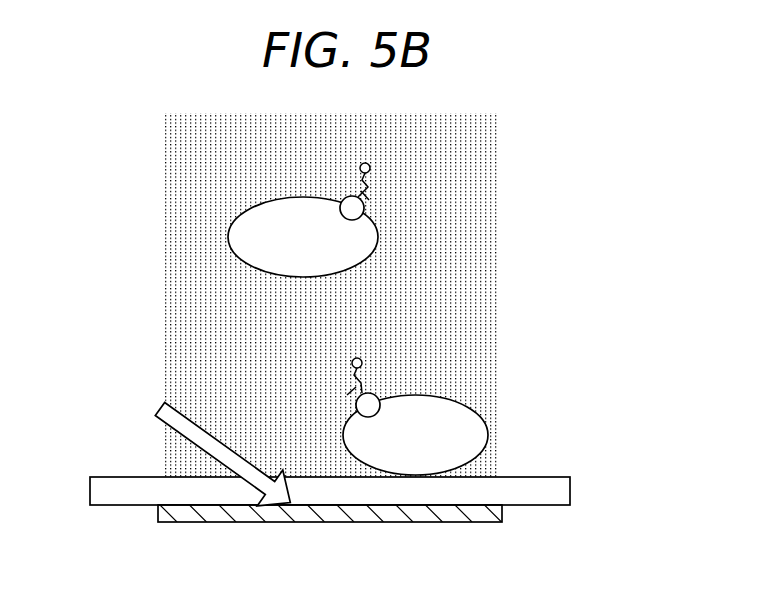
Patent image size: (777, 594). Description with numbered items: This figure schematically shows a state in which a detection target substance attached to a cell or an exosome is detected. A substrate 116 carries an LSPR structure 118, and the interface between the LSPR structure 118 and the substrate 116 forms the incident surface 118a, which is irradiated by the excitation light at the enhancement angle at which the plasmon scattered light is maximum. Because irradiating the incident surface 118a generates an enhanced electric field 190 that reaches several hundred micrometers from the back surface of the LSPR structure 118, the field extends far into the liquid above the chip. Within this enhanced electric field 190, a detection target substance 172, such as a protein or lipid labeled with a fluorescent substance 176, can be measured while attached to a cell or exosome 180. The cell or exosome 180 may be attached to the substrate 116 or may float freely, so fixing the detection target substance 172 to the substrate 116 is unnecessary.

The enhanced electric field 190 is at (200, 188).
The cell or exosome 180 is at (340, 243).
The detection target substance 172 is at (362, 212).
The fluorescent substance 176 is at (370, 169).
The substrate 116 is at (570, 490).
The LSPR structure 118 is at (480, 522).
The incident surface 118a is at (487, 498).